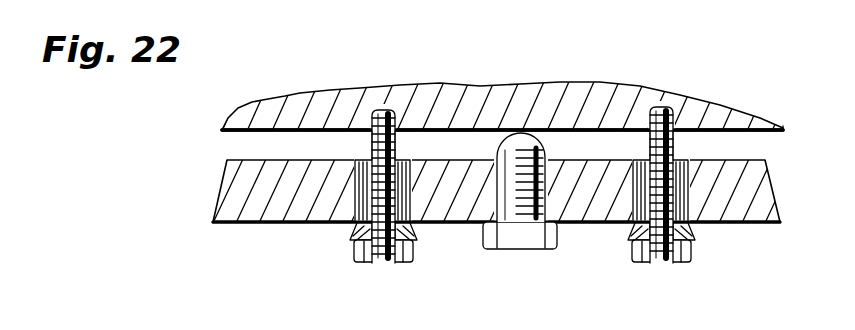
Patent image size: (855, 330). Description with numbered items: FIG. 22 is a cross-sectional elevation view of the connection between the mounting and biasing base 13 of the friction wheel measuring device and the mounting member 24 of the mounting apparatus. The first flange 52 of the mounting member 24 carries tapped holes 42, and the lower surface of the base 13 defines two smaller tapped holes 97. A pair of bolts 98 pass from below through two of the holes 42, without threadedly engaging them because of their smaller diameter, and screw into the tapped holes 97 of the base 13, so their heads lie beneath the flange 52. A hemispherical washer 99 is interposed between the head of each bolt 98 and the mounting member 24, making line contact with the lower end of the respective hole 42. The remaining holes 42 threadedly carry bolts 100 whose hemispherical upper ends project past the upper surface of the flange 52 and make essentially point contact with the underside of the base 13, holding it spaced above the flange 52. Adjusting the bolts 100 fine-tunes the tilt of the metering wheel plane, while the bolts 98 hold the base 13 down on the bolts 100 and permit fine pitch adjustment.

The mounting and biasing base 13 is at (648, 83).
The mounting member 24 is at (206, 163).
The tapped holes 42 is at (402, 166).
The first flange 52 is at (777, 178).
The tapped holes 97 is at (386, 110).
The bolts 98 is at (352, 196).
The hemispherical washer 99 is at (352, 231).
The bolts 100 is at (520, 249).